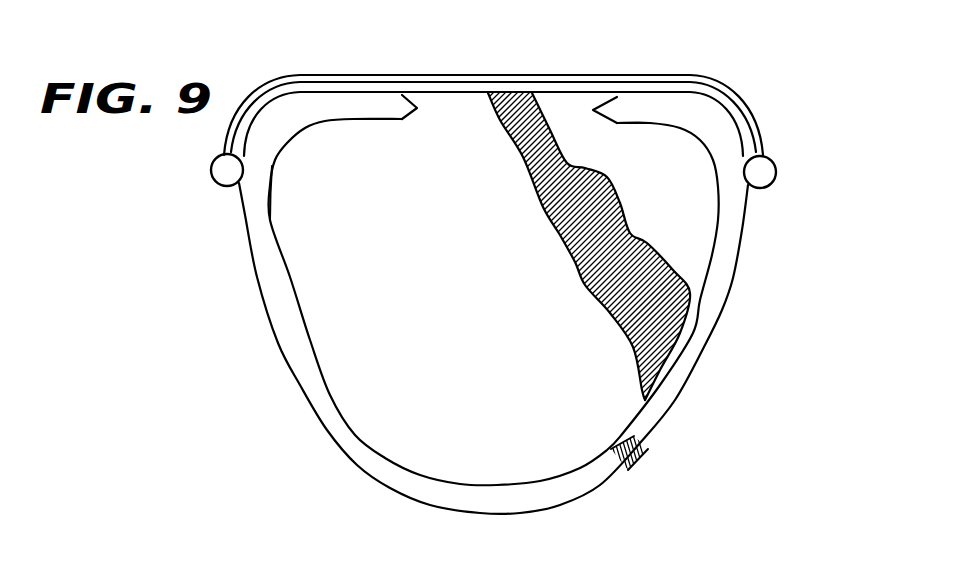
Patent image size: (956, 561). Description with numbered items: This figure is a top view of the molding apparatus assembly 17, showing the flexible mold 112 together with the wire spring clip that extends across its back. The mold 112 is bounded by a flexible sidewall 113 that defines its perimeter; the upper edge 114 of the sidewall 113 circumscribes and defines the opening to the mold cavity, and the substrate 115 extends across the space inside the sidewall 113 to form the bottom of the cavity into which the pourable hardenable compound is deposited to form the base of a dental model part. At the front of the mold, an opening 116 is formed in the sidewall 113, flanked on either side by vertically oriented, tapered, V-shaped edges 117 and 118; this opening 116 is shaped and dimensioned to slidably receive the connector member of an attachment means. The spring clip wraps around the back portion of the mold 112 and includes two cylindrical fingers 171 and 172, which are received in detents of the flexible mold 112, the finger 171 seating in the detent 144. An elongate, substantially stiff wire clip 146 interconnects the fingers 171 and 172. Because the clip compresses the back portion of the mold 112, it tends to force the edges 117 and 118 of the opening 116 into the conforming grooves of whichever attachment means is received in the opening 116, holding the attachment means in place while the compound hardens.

The frame assembly 17 is at (603, 66).
The flexible mold 112 is at (266, 341).
The flexible sidewall 113 is at (326, 432).
The upper edge 114 is at (378, 460).
The substrate 115 is at (562, 366).
The opening 116 is at (417, 110).
The V-shaped edge 117 is at (401, 118).
The V-shaped edge 118 is at (613, 110).
The detent 144 is at (248, 172).
The wire clip 146 is at (420, 74).
The cylindrical finger 171 is at (210, 170).
The cylindrical finger 172 is at (777, 173).